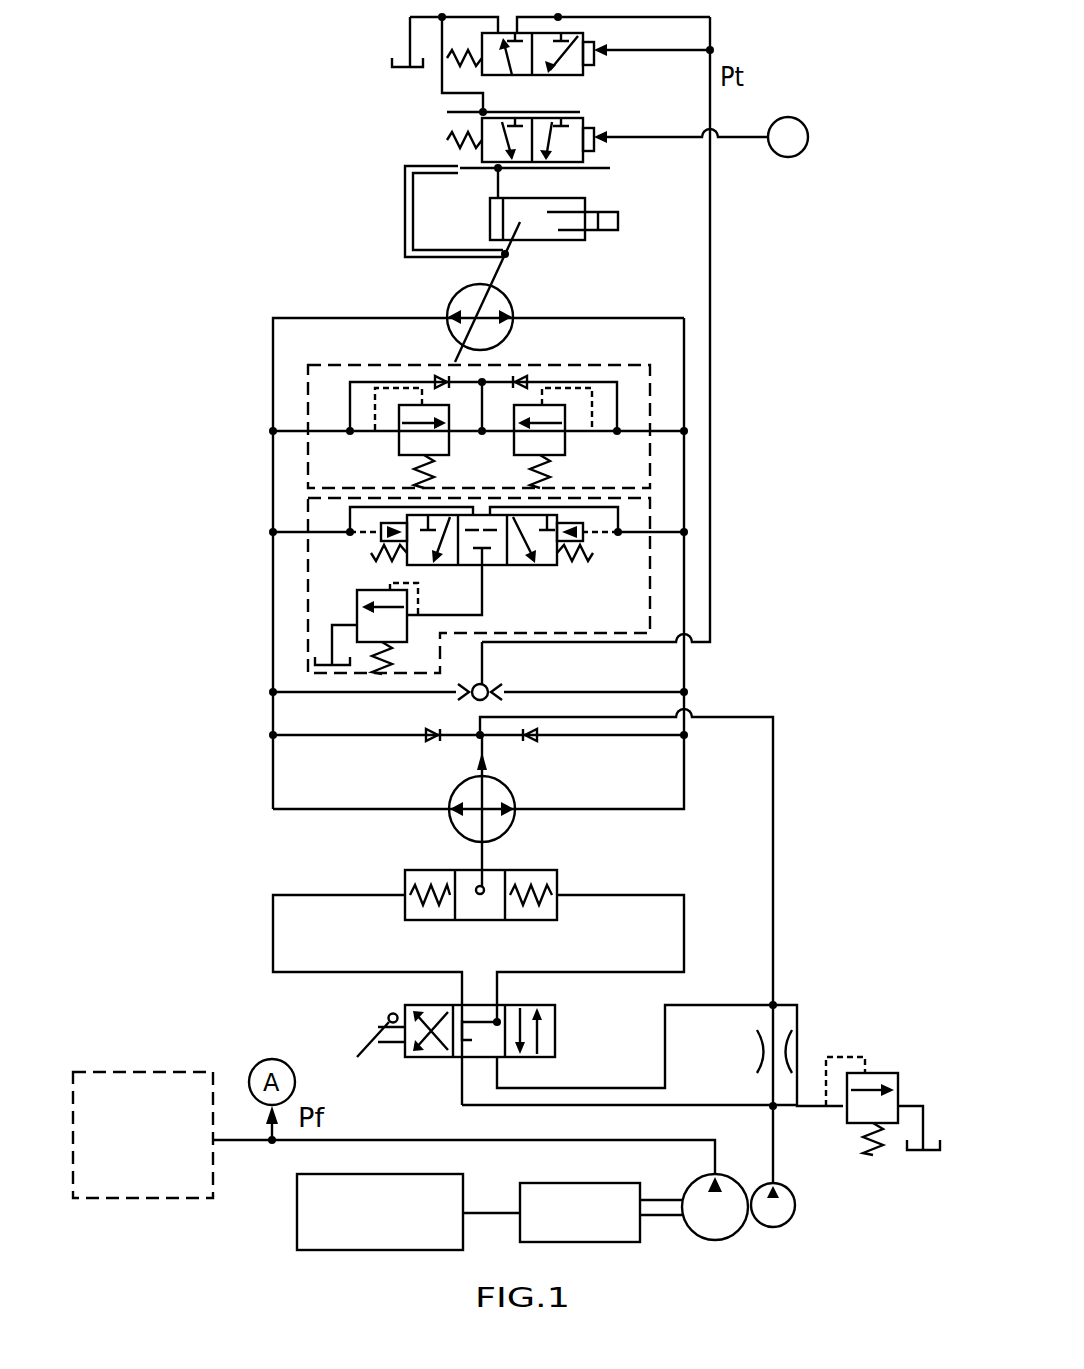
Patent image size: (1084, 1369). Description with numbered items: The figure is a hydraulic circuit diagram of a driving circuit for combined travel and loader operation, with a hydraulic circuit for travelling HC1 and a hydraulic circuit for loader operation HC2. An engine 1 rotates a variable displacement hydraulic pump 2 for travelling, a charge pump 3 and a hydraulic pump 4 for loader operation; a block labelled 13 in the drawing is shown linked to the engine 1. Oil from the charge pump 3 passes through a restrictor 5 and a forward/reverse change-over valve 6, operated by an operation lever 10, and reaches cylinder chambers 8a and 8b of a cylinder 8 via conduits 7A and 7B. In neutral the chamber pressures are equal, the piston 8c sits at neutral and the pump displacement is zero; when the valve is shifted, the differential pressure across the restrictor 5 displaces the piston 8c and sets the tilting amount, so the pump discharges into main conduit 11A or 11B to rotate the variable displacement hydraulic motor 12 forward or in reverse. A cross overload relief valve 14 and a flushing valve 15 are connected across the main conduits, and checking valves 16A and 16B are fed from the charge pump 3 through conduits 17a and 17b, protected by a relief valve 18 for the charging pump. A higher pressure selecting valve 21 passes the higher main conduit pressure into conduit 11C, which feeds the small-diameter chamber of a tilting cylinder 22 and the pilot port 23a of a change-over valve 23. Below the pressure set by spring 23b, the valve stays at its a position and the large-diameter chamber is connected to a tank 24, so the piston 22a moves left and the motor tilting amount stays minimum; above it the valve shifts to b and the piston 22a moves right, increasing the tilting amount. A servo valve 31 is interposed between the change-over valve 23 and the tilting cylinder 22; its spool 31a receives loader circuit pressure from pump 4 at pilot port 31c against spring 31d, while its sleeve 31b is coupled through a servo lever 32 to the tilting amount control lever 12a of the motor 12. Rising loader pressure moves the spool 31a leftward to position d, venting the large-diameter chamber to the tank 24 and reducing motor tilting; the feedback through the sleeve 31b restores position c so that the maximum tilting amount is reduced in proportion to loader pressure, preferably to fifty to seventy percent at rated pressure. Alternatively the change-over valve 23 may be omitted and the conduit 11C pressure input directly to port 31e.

The engine 1 is at (520, 1184).
The variable displacement hydraulic pump 2 is at (452, 796).
The charge pump 3 is at (796, 1206).
The hydraulic pump for loader operation 4 is at (722, 1178).
The restrictor 5 is at (755, 1049).
The forward/reverse change-over valve 6 is at (557, 1031).
The conduit 7A is at (273, 926).
The conduit 7B is at (684, 921).
The cylinder 8 is at (567, 878).
The cylinder chamber 8a is at (428, 882).
The cylinder chamber 8b is at (530, 882).
The piston 8c is at (480, 922).
The operation lever 10 is at (378, 1034).
The main conduit 11A is at (273, 478).
The main conduit 11B is at (684, 348).
The conduit 11C is at (710, 263).
The variable displacement hydraulic motor 12 is at (455, 298).
The tilting amount control lever 12a is at (495, 281).
The accelerator pedal 13 is at (297, 1214).
The cross overload relief valve 14 is at (650, 407).
The flushing valve 15 is at (650, 517).
The checking valve 16A is at (430, 739).
The checking valve 16B is at (535, 741).
The conduit 17a is at (773, 818).
The conduit 17b is at (775, 1146).
The relief valve for the charging pump 18 is at (882, 1073).
The higher pressure selecting valve 21 is at (458, 695).
The tilting cylinder 22 is at (592, 231).
The piston 22a is at (547, 206).
The change-over valve 23 is at (442, 40).
The pilot port 23a is at (597, 46).
The spring 23b is at (442, 84).
The tank 24 is at (392, 63).
The servo valve 31 is at (482, 128).
The spool 31a is at (583, 160).
The sleeve 31b is at (447, 112).
The pilot port 31c is at (608, 130).
The spring 31d is at (447, 142).
The port 31e is at (493, 112).
The servo lever 32 is at (405, 200).
The hydraulic circuit for travelling HC1 is at (244, 704).
The hydraulic circuit for loader operation HC2 is at (137, 1068).